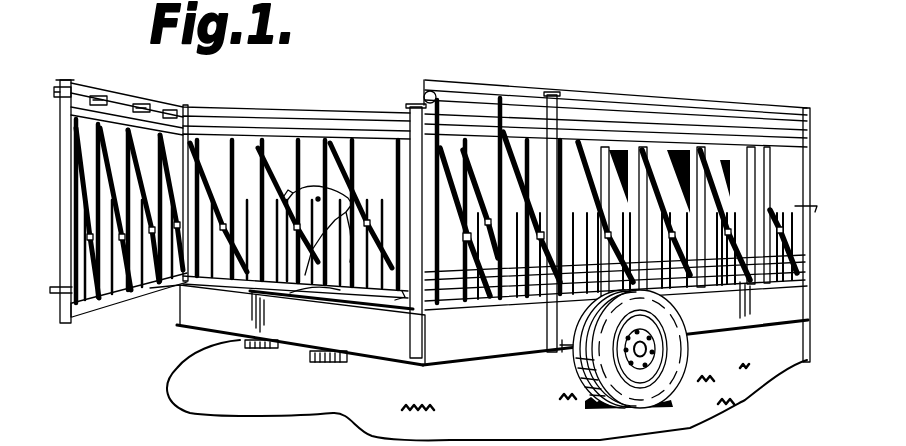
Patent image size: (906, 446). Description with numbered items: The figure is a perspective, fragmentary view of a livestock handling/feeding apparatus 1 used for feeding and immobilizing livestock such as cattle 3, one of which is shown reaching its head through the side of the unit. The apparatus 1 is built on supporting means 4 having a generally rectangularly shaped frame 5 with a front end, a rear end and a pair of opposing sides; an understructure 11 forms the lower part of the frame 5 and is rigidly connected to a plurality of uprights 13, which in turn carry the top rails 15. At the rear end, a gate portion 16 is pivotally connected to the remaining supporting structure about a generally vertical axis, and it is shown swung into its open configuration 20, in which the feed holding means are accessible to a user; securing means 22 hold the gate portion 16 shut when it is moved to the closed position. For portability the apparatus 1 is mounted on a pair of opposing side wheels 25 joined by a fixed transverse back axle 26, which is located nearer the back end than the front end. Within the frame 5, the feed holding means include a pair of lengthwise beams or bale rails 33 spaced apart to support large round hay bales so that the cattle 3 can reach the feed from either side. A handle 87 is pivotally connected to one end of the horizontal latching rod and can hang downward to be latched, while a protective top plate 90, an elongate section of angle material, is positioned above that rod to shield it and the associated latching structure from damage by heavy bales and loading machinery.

The livestock handling/feeding apparatus 1 is at (618, 55).
The cattle 3 is at (318, 187).
The supporting means 4 is at (402, 362).
The frame 5 is at (460, 354).
The understructure 11 is at (194, 318).
The uprights 13 is at (409, 108).
The top rails 15 is at (74, 88).
The gate portion 16 is at (142, 100).
The open configuration 20 is at (426, 390).
The securing means 22 is at (60, 290).
The side wheels 25 is at (688, 352).
The back axle 26 is at (566, 354).
The bale rails 33 is at (331, 311).
The handle 87 is at (56, 132).
The protective top plate 90 is at (250, 108).